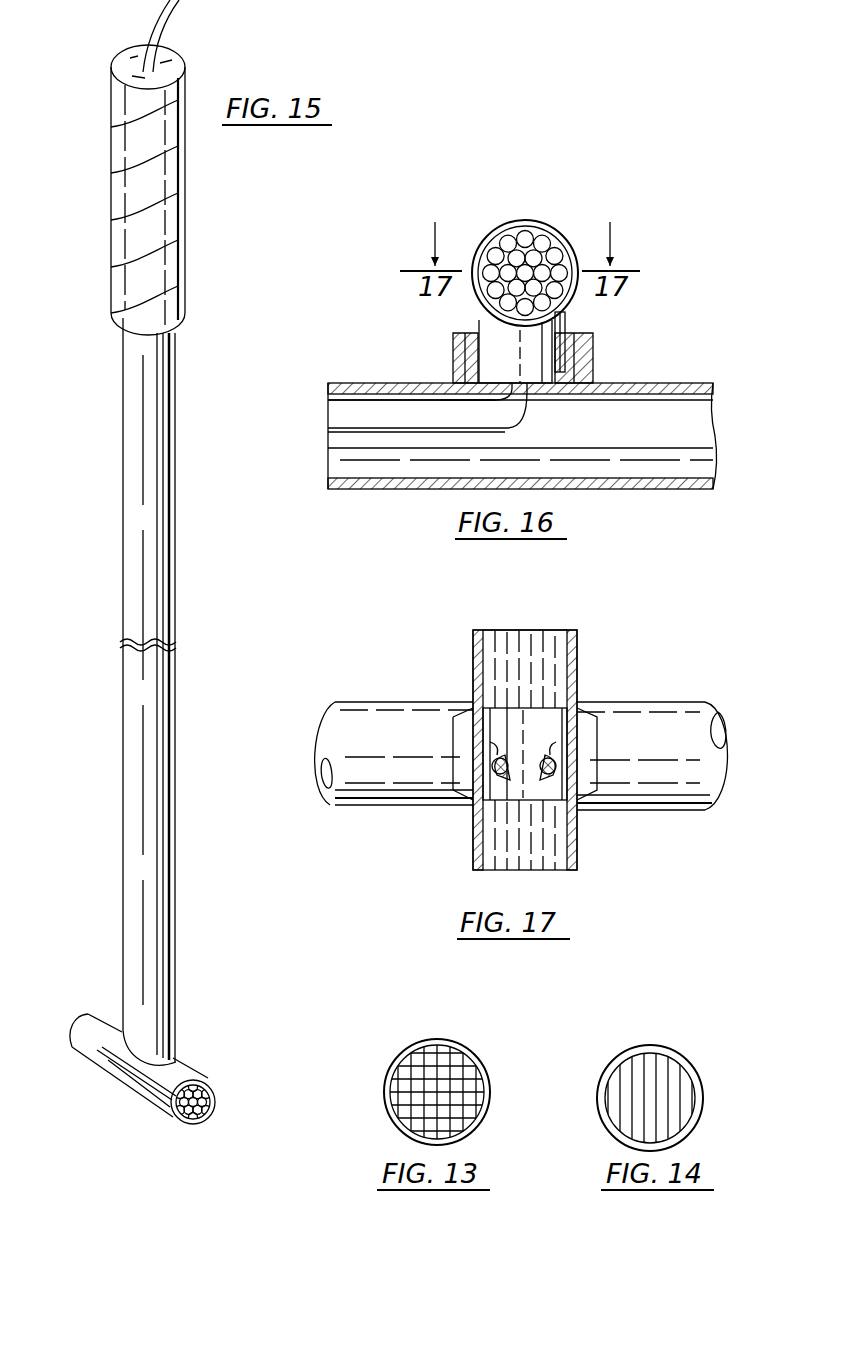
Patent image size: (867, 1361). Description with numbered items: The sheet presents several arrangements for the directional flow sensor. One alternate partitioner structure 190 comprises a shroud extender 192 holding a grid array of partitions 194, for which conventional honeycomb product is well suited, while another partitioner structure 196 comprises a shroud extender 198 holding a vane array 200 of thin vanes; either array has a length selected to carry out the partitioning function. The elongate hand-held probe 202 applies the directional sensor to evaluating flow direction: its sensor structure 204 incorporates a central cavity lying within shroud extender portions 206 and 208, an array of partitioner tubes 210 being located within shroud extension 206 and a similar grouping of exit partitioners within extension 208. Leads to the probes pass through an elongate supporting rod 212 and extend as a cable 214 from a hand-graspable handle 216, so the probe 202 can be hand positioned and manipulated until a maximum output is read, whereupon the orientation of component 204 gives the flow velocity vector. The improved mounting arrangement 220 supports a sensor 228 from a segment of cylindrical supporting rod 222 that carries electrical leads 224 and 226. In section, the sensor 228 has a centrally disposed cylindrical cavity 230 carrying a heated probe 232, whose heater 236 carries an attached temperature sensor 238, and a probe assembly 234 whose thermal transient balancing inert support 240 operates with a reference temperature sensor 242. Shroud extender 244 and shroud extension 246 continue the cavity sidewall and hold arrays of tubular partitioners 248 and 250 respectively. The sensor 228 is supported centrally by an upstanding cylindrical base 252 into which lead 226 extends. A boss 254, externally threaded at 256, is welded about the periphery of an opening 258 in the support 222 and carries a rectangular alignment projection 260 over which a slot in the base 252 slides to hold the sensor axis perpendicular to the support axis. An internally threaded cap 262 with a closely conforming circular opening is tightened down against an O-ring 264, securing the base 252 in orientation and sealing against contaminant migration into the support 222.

In FIG. 13, the partitioner structure 190 is at (508, 1006).
In FIG. 13, the shroud extender 192 is at (488, 1076).
In FIG. 13, the grid array of partitions 194 is at (417, 1063).
In FIG. 14, the partitioner structure 196 is at (738, 1020).
In FIG. 14, the shroud extender 198 is at (704, 1097).
In FIG. 14, the vane array 200 is at (645, 1068).
In FIG. 15, the hand-held probe 202 is at (268, 273).
In FIG. 15, the sensor structure 204 is at (262, 1038).
In FIG. 15, the shroud extender portion 206 is at (163, 1112).
In FIG. 15, the shroud extender portion 208 is at (98, 1062).
In FIG. 15, the array of partitioner tubes 210 is at (216, 1099).
In FIG. 15, the supporting rod 212 is at (176, 585).
In FIG. 15, the cable 214 is at (172, 18).
In FIG. 15, the handle 216 is at (178, 203).
In FIG. 16, the mounting arrangement 220 is at (710, 325).
In FIG. 17, the mounting arrangement 220 is at (716, 627).
In FIG. 16, the supporting rod 222 is at (675, 383).
In FIG. 17, the supporting rod 222 is at (655, 808).
In FIG. 16, the electrical lead 224 is at (608, 455).
In FIG. 16, the electrical lead 226 is at (508, 418).
In FIG. 16, the sensor 228 is at (616, 183).
In FIG. 17, the sensor 228 is at (647, 654).
In FIG. 17, the cylindrical cavity 230 is at (592, 708).
In FIG. 17, the heated probe 232 is at (506, 777).
In FIG. 17, the probe assembly 234 is at (560, 777).
In FIG. 17, the heater 236 is at (520, 762).
In FIG. 17, the temperature sensor 238 is at (503, 740).
In FIG. 17, the thermal transient balancing inert support 240 is at (560, 764).
In FIG. 17, the reference temperature sensor 242 is at (548, 750).
In FIG. 17, the shroud extender 244 is at (473, 652).
In FIG. 16, the shroud extension 246 is at (503, 228).
In FIG. 17, the shroud extension 246 is at (473, 858).
In FIG. 17, the array of tubular partitioners 248 is at (541, 632).
In FIG. 16, the array of tubular partitioners 250 is at (530, 230).
In FIG. 17, the array of tubular partitioners 250 is at (548, 873).
In FIG. 16, the cylindrical base 252 is at (562, 328).
In FIG. 16, the boss 254 is at (594, 364).
In FIG. 16, the external threads 256 is at (592, 355).
In FIG. 16, the opening 258 is at (478, 401).
In FIG. 16, the alignment projection 260 is at (548, 392).
In FIG. 16, the cap 262 is at (456, 335).
In FIG. 17, the cap 262 is at (465, 800).
In FIG. 16, the O-ring 264 is at (452, 354).